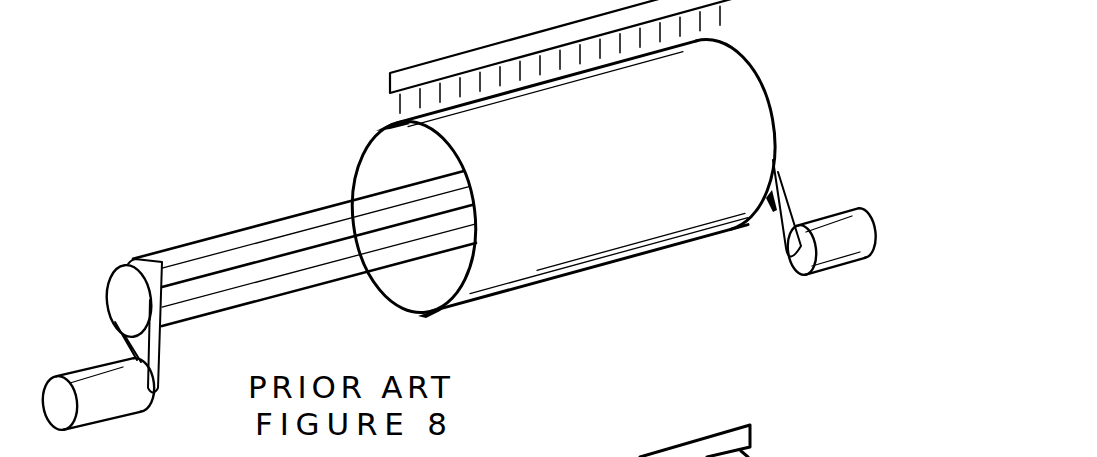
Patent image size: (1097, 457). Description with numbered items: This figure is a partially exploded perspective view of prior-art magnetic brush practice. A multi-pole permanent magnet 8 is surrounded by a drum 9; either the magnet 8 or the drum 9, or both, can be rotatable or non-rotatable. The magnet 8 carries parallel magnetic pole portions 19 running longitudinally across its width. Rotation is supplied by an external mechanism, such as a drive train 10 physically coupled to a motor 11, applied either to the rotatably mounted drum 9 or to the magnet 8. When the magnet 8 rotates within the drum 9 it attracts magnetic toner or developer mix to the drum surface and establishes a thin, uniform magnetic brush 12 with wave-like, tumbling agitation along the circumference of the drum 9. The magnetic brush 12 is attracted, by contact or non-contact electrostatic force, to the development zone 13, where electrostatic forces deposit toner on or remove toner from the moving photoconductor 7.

The photoconductor 7 is at (523, 37).
The multi-pole permanent magnet 8 is at (289, 258).
The drum 9 is at (591, 190).
The drive train 10 is at (160, 353).
The motor 11 is at (83, 368).
The magnetic brush 12 is at (733, 3).
The development zone 13 is at (402, 101).
The parallel magnetic pole portions 19 is at (340, 236).